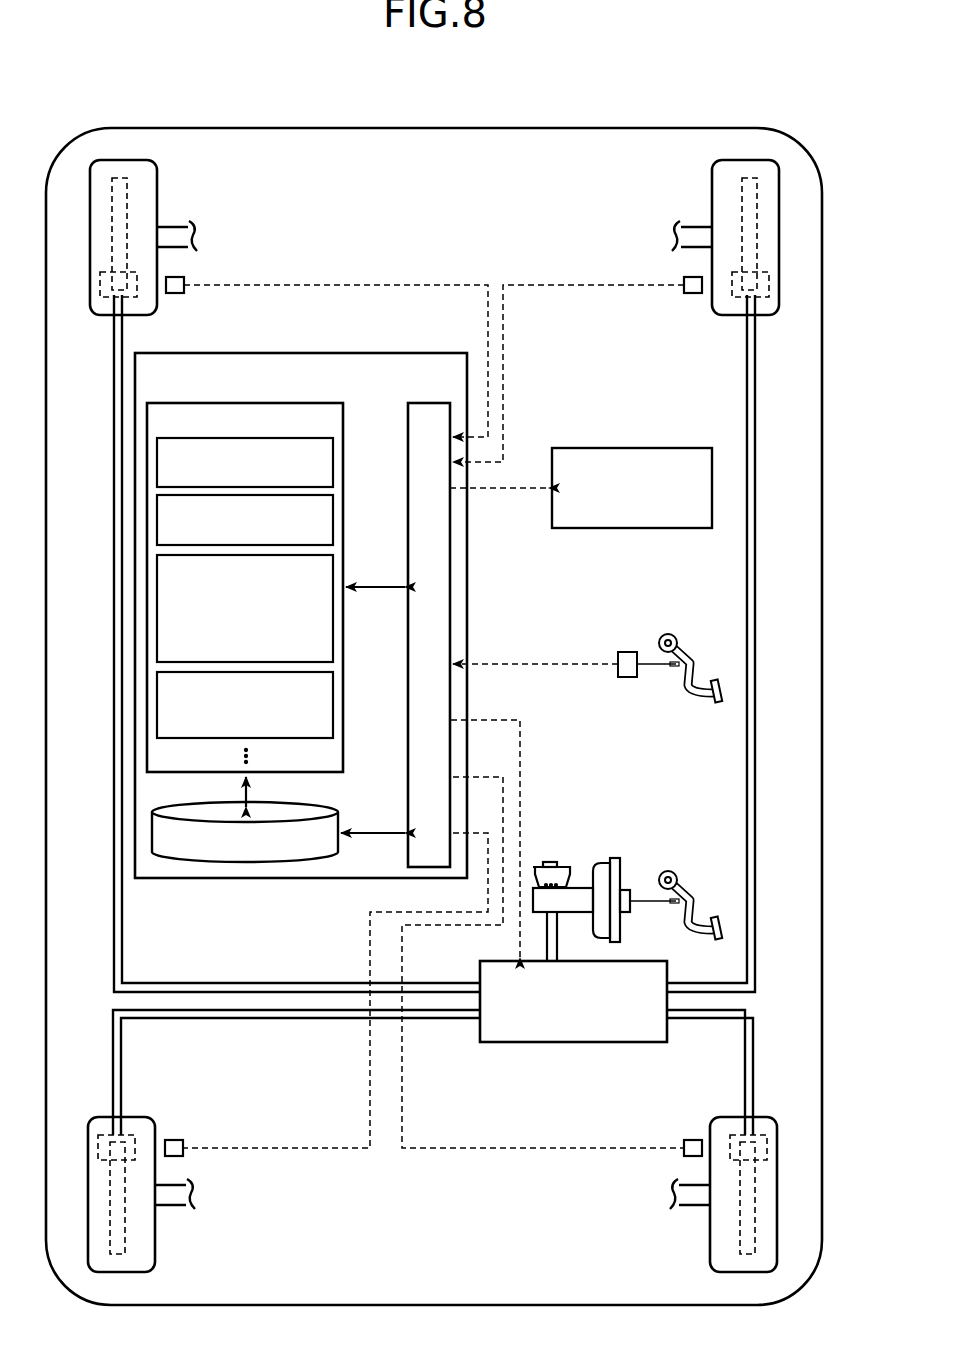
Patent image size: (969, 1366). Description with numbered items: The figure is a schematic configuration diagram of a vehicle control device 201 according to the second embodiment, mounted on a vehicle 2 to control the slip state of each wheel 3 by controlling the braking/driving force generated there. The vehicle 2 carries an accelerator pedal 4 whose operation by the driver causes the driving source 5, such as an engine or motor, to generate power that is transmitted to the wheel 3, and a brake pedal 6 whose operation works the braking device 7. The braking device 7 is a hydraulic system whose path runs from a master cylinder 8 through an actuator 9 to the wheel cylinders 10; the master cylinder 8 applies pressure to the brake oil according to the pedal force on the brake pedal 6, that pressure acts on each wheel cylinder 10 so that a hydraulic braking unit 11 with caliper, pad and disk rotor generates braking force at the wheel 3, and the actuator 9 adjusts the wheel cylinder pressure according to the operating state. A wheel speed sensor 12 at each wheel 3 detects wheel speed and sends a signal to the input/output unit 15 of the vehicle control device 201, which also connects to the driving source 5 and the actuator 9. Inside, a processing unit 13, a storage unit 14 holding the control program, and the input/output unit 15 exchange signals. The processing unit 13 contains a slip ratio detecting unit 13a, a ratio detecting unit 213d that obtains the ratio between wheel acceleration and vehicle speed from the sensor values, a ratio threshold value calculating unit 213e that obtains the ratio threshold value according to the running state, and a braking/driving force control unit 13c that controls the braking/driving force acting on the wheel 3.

The vehicle 2 is at (614, 106).
The wheel 3 is at (157, 191).
The accelerator pedal 4 is at (684, 642).
The driving source 5 is at (668, 448).
The brake pedal 6 is at (682, 878).
The braking device 7 is at (768, 782).
The master cylinder 8 is at (576, 888).
The actuator 9 is at (628, 1042).
The wheel cylinder 10 is at (106, 306).
The hydraulic braking unit 11 is at (172, 160).
The wheel speed sensor 12 is at (176, 294).
The processing unit 13 is at (345, 421).
The slip ratio detecting unit 13a is at (335, 462).
The braking/driving force control unit 13c is at (335, 690).
The storage unit 14 is at (340, 813).
The input/output unit 15 is at (426, 403).
The vehicle control device 201 is at (316, 328).
The ratio detecting unit 213d is at (335, 520).
The ratio threshold value calculating unit 213e is at (335, 614).